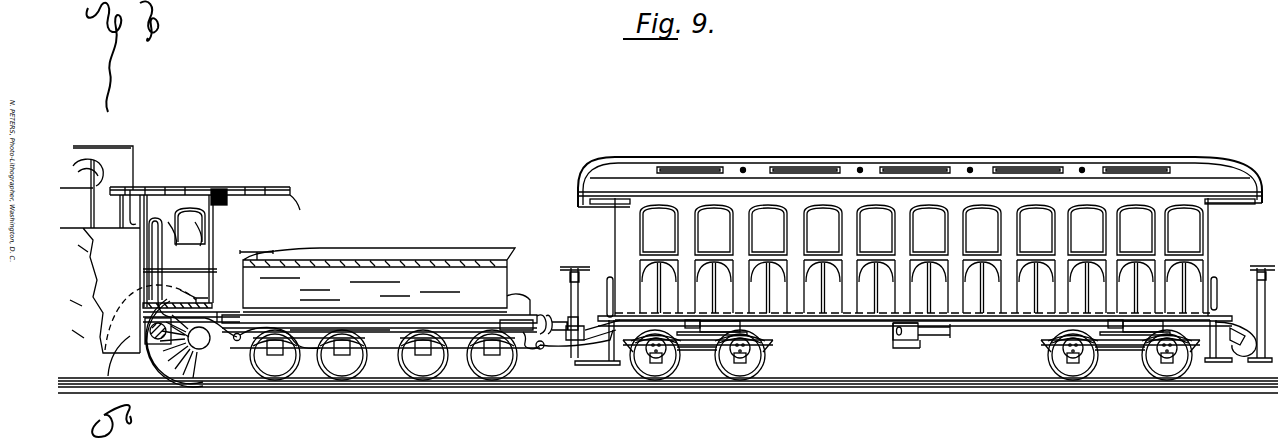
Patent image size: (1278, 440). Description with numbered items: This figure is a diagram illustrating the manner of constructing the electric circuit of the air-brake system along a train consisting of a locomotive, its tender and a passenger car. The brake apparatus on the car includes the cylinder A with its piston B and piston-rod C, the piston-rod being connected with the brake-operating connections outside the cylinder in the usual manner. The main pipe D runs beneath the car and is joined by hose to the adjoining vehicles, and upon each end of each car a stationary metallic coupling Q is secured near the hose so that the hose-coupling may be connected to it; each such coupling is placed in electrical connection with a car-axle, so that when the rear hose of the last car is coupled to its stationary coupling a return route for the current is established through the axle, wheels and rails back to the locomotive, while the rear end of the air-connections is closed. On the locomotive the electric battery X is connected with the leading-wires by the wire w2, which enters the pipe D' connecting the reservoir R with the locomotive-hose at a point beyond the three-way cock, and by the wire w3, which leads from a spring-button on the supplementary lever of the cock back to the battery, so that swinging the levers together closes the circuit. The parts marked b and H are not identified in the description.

The cylinder A is at (906, 339).
The piston B is at (905, 331).
The truck bolster b is at (923, 327).
The piston-rod C is at (243, 335).
The main pipe D is at (720, 345).
The pipe D' is at (193, 277).
The flexible hose H is at (564, 352).
The stationary coupling Q is at (592, 330).
The reservoir R is at (178, 343).
The electric battery X is at (198, 295).
The wire w2 is at (173, 243).
The wire w3 is at (197, 243).